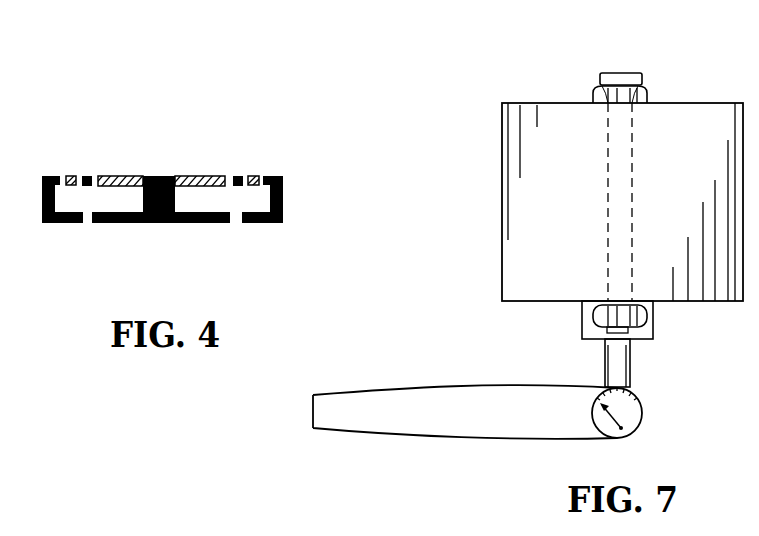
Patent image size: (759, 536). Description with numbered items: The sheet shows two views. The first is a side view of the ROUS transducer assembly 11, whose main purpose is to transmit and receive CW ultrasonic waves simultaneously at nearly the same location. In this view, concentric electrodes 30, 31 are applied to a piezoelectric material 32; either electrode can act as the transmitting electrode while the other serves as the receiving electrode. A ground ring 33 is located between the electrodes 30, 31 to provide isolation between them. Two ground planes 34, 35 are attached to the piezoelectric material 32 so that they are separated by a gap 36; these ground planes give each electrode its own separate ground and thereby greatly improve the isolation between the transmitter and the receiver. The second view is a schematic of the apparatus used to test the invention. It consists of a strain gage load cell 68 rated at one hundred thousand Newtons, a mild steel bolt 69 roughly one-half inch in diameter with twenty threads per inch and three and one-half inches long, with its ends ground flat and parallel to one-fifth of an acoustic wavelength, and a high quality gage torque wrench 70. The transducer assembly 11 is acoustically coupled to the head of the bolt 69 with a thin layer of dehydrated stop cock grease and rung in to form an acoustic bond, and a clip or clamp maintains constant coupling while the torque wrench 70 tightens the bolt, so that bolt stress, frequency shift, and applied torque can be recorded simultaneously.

In FIG. 7, the ROUS transducer assembly 11 is at (613, 73).
In FIG. 4, the concentric electrode 30 is at (125, 176).
In FIG. 4, the concentric electrode 31 is at (68, 176).
In FIG. 4, the piezoelectric material 32 is at (258, 203).
In FIG. 4, the ground ring 33 is at (238, 176).
In FIG. 4, the ground plane 34 is at (47, 176).
In FIG. 4, the ground plane 35 is at (162, 230).
In FIG. 4, the gap 36 is at (87, 223).
In FIG. 7, the strain gage load cell 68 is at (502, 200).
In FIG. 7, the mild steel bolt 69 is at (647, 100).
In FIG. 7, the gage torque wrench 70 is at (443, 388).